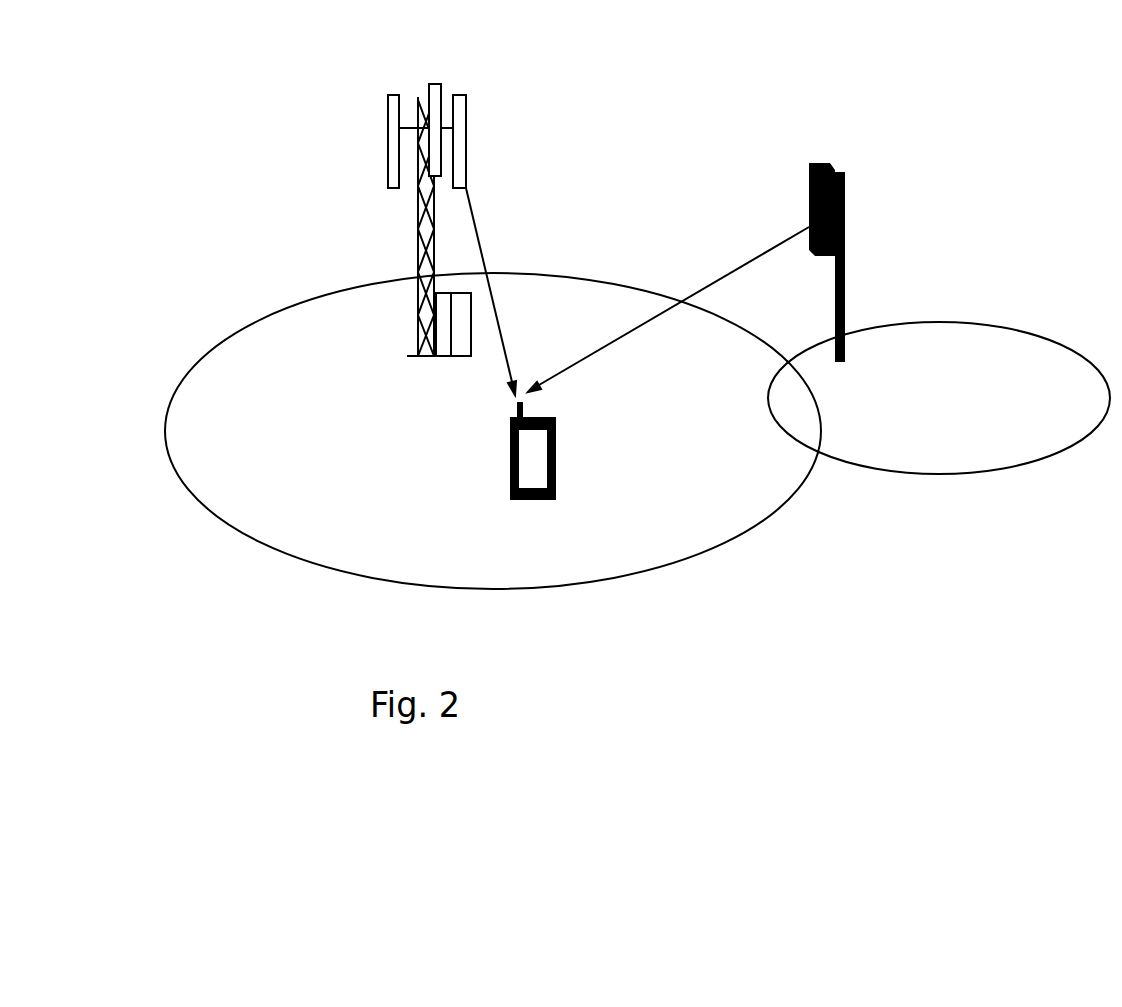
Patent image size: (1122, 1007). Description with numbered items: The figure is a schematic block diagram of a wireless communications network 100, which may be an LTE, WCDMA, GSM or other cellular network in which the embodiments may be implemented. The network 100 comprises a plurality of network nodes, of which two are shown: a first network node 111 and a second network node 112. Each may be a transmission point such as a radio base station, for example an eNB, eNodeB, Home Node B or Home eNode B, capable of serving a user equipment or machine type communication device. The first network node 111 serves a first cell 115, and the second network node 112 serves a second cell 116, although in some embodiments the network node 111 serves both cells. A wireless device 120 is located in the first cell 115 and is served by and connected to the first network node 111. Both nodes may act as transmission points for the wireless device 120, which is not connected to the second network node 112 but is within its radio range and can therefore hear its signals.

The wireless communications network 100 is at (836, 546).
The network node 111 is at (418, 313).
The second network node 112 is at (845, 267).
The first cell 115 is at (355, 578).
The second cell 116 is at (1088, 362).
The wireless device 120 is at (512, 457).